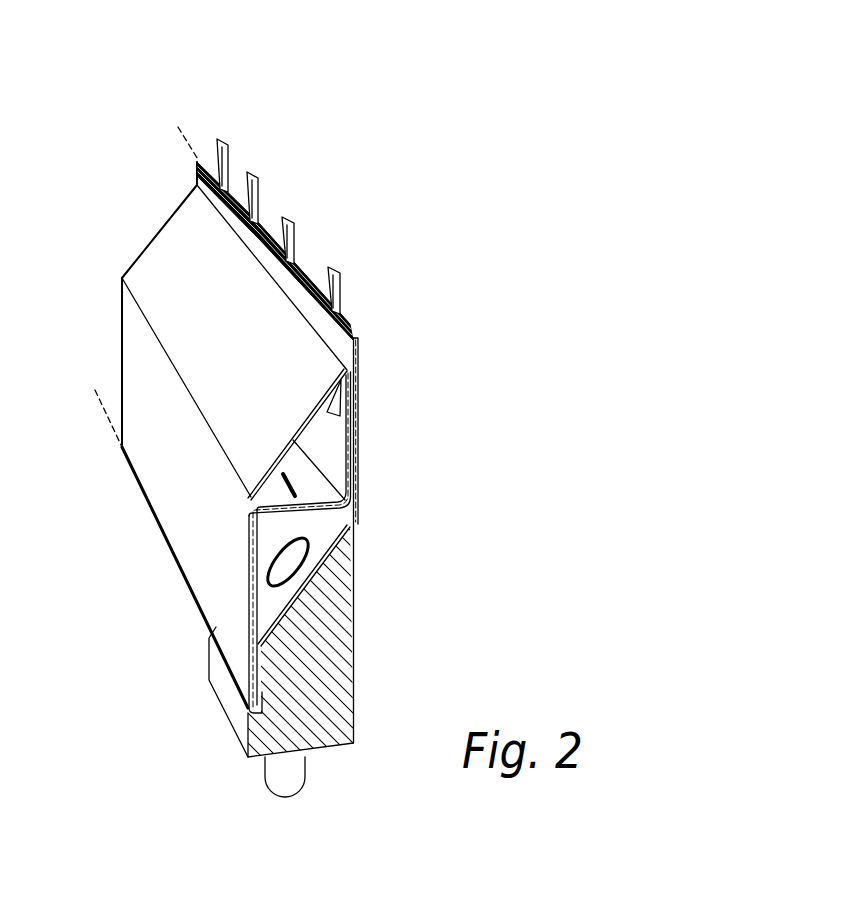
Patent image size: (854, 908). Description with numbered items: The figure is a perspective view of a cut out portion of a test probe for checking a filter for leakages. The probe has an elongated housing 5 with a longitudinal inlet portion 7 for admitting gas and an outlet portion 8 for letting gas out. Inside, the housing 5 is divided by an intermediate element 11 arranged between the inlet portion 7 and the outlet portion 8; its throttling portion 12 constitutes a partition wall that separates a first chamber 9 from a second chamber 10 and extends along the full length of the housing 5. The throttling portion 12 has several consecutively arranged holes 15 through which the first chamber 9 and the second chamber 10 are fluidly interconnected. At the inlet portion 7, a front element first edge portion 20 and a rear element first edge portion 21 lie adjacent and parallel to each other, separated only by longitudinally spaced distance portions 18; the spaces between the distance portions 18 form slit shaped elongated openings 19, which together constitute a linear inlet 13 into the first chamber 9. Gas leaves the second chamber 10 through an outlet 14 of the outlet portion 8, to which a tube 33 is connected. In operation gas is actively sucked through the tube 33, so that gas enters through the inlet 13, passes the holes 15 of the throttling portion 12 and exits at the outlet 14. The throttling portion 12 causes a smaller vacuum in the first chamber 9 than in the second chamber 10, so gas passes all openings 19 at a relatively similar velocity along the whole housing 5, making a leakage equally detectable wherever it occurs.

The elongated housing 5 is at (166, 510).
The longitudinal inlet portion 7 is at (262, 279).
The outlet portion 8 is at (338, 547).
The first chamber 9 is at (342, 433).
The second chamber 10 is at (336, 521).
The intermediate element 11 is at (348, 475).
The throttling portion 12 is at (308, 483).
The inlet 13 is at (266, 208).
The outlet 14 is at (302, 568).
The holes 15 is at (285, 485).
The distance portions 18 is at (233, 187).
The elongated openings 19 is at (210, 166).
The front element first edge portion 20 is at (328, 338).
The rear element first edge portion 21 is at (358, 372).
The tube 33 is at (272, 777).